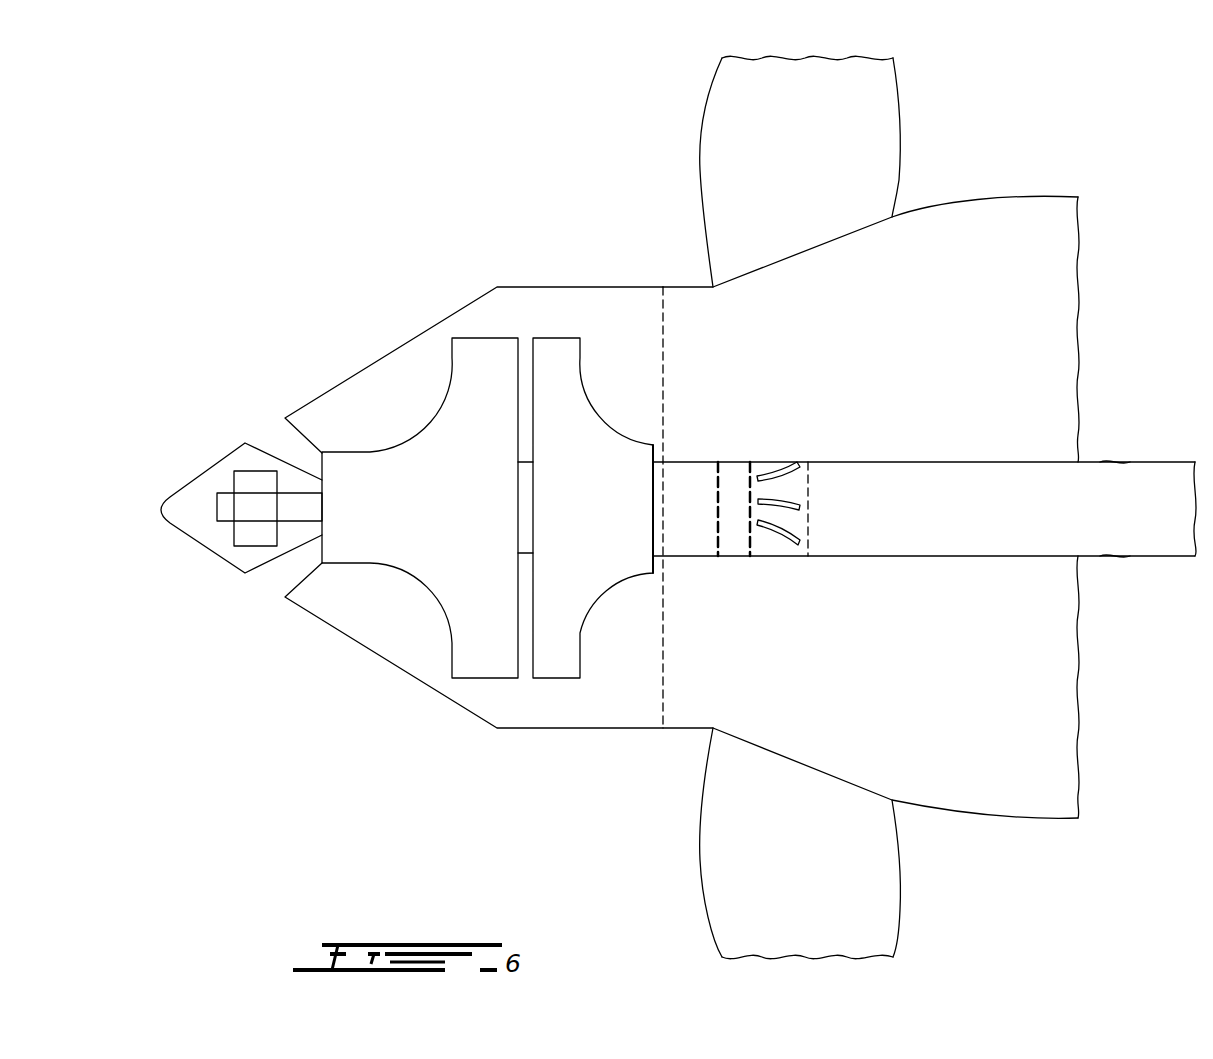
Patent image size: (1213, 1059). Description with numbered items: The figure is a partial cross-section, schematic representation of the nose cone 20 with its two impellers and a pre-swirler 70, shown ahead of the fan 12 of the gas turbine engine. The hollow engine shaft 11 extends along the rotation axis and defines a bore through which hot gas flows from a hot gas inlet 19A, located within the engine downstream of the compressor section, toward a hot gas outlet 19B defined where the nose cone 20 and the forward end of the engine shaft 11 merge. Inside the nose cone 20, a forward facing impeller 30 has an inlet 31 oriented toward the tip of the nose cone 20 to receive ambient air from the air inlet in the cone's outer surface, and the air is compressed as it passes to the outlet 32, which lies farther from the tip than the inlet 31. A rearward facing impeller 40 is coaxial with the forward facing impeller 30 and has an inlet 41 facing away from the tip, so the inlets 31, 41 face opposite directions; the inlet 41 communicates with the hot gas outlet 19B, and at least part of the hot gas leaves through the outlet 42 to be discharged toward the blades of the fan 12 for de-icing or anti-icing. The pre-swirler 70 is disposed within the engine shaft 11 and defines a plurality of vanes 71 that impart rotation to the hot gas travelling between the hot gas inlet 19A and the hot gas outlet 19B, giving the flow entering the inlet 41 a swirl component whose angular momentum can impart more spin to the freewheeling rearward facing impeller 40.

The engine shaft 11 is at (972, 500).
The fan 12 is at (676, 137).
The hot gas inlet 19A is at (1118, 462).
The hot gas outlet 19B is at (720, 527).
The nose cone 20 is at (388, 663).
The forward facing impeller 30 is at (336, 432).
The inlet 31 is at (322, 463).
The outlet 32 is at (480, 352).
The rearward facing impeller 40 is at (630, 432).
The inlet 41 is at (655, 470).
The outlet 42 is at (555, 350).
The pre-swirler 70 is at (812, 500).
The vanes 71 is at (777, 542).